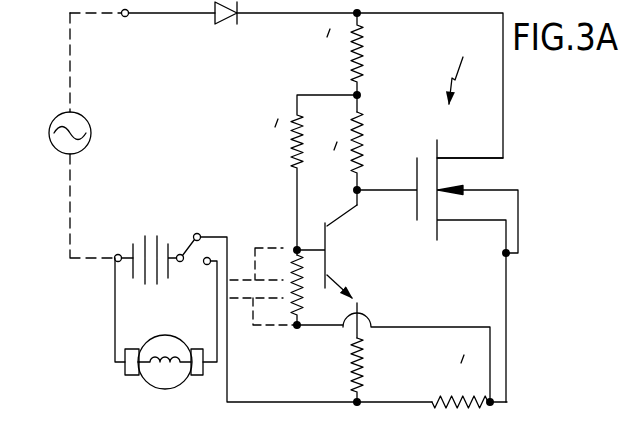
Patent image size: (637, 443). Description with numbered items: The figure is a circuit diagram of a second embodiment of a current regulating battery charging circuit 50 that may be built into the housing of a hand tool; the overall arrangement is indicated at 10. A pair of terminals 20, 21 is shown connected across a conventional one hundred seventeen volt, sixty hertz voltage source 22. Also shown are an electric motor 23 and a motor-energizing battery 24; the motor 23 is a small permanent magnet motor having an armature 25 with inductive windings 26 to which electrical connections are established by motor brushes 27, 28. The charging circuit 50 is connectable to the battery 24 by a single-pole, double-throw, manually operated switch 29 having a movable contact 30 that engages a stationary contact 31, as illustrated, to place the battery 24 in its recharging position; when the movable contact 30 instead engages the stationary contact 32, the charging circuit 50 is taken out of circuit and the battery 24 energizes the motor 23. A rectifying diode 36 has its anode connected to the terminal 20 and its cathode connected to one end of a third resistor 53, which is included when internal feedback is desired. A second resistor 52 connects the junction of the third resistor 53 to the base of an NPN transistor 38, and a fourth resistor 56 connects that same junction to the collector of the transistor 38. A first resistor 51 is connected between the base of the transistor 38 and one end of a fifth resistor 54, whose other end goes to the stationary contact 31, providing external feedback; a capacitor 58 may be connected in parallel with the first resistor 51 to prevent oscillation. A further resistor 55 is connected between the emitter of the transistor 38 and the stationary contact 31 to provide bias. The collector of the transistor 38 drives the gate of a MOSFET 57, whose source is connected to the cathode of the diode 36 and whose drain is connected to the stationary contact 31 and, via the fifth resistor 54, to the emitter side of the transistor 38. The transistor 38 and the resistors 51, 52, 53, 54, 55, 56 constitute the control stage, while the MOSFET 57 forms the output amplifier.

The motor control circuit 10 is at (636, 217).
The terminal 20 is at (125, 17).
The terminal 21 is at (116, 256).
The voltage source 22 is at (79, 110).
The electric motor 23 is at (141, 398).
The battery 24 is at (160, 243).
The armature 25 is at (180, 390).
The inductive windings 26 is at (155, 358).
The motor brush 27 is at (123, 370).
The motor brush 28 is at (192, 378).
The switch 29 is at (200, 224).
The movable contact 30 is at (195, 234).
The stationary contact 31 is at (201, 236).
The stationary contact 32 is at (158, 310).
The rectifying diode 36 is at (214, 16).
The transistor 38 is at (372, 292).
The battery charging circuit 50 is at (523, 127).
The first resistor 51 is at (304, 308).
The second resistor 52 is at (300, 121).
The third resistor 53 is at (364, 55).
The fifth resistor 54 is at (432, 398).
The further resistor 55 is at (367, 353).
The fourth resistor 56 is at (363, 141).
The MOSFET 57 is at (423, 229).
The capacitor 58 is at (242, 276).